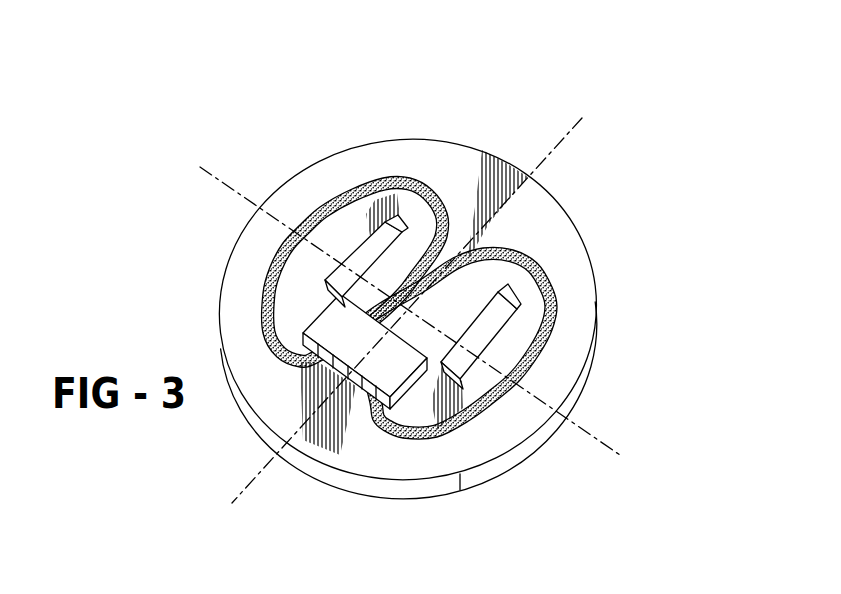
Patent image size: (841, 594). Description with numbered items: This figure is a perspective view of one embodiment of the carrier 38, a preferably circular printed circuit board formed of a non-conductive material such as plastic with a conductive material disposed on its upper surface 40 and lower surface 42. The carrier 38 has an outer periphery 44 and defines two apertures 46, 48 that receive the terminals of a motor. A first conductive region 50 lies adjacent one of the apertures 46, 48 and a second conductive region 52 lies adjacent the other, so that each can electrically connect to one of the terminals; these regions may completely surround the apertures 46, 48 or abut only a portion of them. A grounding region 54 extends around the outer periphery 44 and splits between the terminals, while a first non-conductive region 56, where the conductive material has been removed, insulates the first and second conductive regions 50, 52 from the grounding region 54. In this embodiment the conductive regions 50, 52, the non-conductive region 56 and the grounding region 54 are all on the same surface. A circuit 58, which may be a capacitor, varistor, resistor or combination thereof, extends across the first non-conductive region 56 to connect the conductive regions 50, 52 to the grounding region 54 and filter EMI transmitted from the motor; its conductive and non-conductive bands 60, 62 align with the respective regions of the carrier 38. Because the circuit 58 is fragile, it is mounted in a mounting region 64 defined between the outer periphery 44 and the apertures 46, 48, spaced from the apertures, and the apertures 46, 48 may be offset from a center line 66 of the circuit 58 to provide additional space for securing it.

The carrier 38 is at (580, 245).
The upper surface 40 is at (442, 167).
The lower surface 42 is at (515, 463).
The outer periphery 44 is at (308, 182).
The aperture 46 is at (400, 218).
The aperture 48 is at (516, 297).
The first conductive region 50 is at (348, 213).
The second conductive region 52 is at (527, 333).
The grounding region 54 is at (547, 228).
The first non-conductive region 56 is at (447, 203).
The circuit 58 is at (410, 392).
The conductive band 60 is at (367, 408).
The non-conductive band 62 is at (357, 378).
The mounting region 64 is at (296, 278).
The center line 66 is at (580, 124).